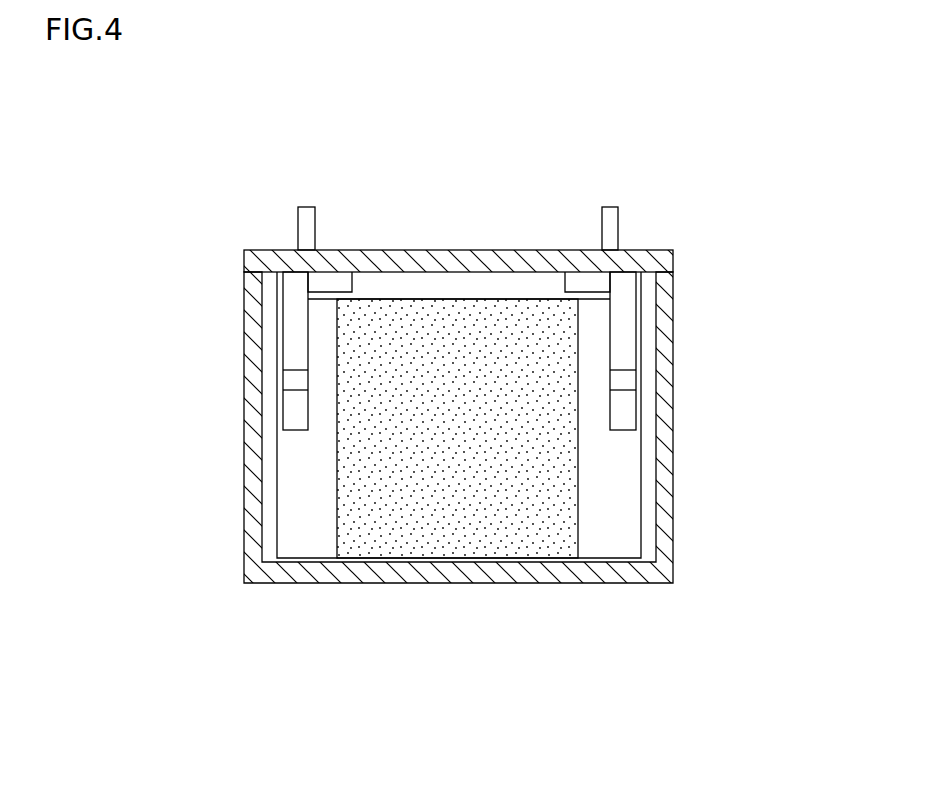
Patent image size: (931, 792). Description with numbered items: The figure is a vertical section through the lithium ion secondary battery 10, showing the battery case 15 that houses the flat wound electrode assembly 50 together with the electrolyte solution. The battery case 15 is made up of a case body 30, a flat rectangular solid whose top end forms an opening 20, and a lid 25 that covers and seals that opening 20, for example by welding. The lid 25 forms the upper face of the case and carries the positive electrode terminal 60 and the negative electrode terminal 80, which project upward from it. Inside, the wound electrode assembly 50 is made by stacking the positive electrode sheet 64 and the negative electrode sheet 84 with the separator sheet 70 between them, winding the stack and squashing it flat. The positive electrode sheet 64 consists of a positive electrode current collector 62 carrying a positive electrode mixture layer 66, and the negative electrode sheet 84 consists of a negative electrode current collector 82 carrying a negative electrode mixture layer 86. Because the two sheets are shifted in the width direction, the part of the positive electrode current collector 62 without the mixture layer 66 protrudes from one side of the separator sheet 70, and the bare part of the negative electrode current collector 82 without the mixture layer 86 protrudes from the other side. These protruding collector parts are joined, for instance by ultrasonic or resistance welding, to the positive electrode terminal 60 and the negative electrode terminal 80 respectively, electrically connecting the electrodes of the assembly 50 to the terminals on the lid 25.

The lithium ion secondary battery 10 is at (760, 121).
The battery case 15 is at (752, 250).
The opening 20 is at (435, 298).
The lid 25 is at (676, 253).
The case body 30 is at (676, 295).
The wound electrode assembly 50 is at (483, 297).
The positive electrode terminal 60 is at (306, 213).
The positive electrode current collector 62 is at (305, 547).
The positive electrode sheet 64 is at (330, 282).
The positive electrode mixture layer 66 is at (400, 521).
The separator sheet 70 is at (473, 541).
The negative electrode terminal 80 is at (612, 210).
The negative electrode current collector 82 is at (607, 548).
The negative electrode sheet 84 is at (587, 282).
The negative electrode mixture layer 86 is at (550, 521).